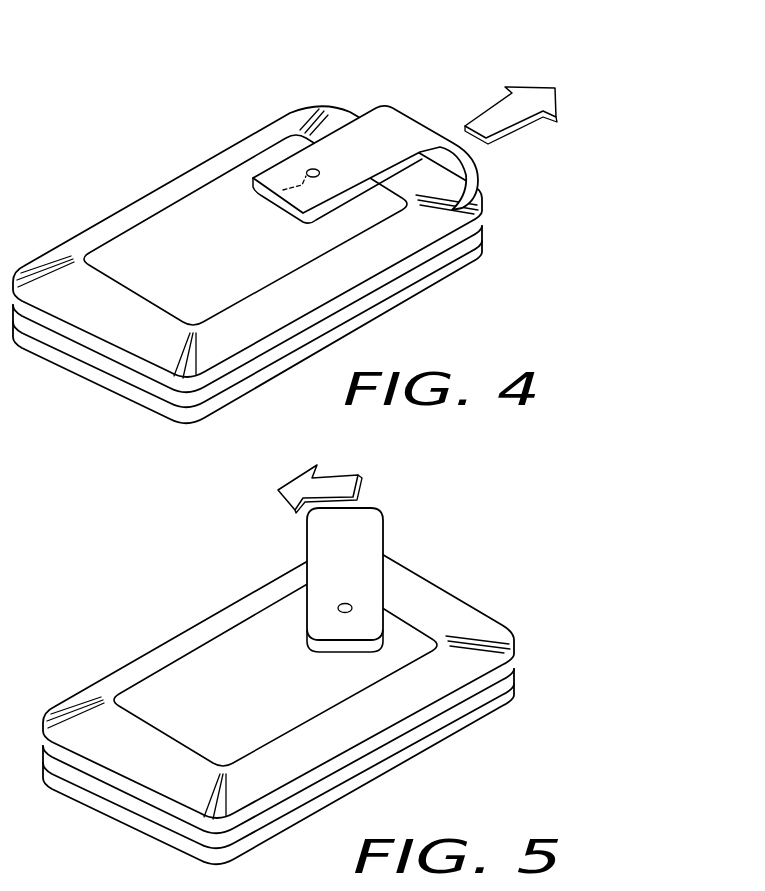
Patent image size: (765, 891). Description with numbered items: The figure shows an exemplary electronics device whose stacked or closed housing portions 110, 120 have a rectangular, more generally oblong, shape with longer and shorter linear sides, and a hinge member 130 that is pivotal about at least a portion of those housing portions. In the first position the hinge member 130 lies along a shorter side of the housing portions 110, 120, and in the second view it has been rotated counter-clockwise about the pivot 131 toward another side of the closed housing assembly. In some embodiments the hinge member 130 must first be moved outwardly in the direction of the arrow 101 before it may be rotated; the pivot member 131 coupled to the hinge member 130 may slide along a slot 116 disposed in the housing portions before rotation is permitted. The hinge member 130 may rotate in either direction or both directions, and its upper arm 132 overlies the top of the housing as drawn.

In FIG. 4, the arrow 101 is at (538, 101).
In FIG. 5, the arrow 101 is at (320, 489).
In FIG. 4, the housing portion 110 is at (367, 257).
In FIG. 5, the housing portion 110 is at (489, 643).
In FIG. 4, the slot 116 is at (289, 181).
In FIG. 4, the housing portion 120 is at (232, 406).
In FIG. 4, the hinge member 130 is at (361, 122).
In FIG. 5, the hinge member 130 is at (320, 558).
In FIG. 4, the pivot 131 is at (309, 165).
In FIG. 5, the pivot 131 is at (343, 606).
In FIG. 4, the upper arm of clip 132 is at (452, 142).
In FIG. 5, the upper arm of clip 132 is at (354, 554).